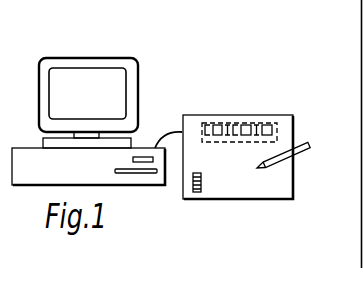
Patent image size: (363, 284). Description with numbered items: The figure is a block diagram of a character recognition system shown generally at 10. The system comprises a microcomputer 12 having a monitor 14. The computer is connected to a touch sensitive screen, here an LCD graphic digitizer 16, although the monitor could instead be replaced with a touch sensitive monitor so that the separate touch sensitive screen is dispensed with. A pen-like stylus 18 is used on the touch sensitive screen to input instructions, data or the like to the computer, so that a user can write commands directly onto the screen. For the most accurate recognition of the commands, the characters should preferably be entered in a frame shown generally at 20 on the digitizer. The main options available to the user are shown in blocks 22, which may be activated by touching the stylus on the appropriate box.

The character recognition system 10 is at (172, 78).
The microcomputer 12 is at (32, 127).
The monitor 14 is at (50, 62).
The LCD graphic digitizer 16 is at (294, 116).
The pen-like stylus 18 is at (303, 150).
The frame 20 is at (225, 116).
The blocks 22 is at (188, 180).